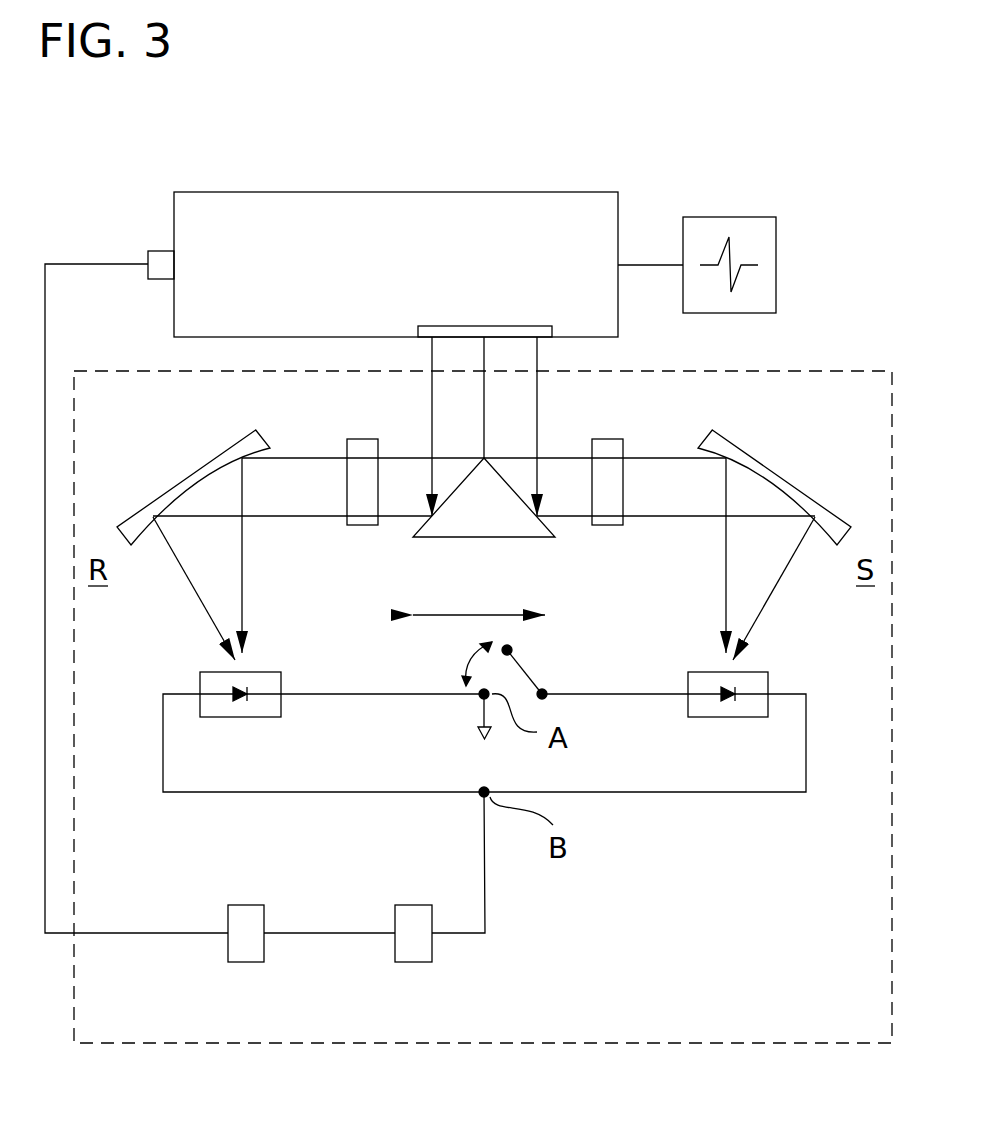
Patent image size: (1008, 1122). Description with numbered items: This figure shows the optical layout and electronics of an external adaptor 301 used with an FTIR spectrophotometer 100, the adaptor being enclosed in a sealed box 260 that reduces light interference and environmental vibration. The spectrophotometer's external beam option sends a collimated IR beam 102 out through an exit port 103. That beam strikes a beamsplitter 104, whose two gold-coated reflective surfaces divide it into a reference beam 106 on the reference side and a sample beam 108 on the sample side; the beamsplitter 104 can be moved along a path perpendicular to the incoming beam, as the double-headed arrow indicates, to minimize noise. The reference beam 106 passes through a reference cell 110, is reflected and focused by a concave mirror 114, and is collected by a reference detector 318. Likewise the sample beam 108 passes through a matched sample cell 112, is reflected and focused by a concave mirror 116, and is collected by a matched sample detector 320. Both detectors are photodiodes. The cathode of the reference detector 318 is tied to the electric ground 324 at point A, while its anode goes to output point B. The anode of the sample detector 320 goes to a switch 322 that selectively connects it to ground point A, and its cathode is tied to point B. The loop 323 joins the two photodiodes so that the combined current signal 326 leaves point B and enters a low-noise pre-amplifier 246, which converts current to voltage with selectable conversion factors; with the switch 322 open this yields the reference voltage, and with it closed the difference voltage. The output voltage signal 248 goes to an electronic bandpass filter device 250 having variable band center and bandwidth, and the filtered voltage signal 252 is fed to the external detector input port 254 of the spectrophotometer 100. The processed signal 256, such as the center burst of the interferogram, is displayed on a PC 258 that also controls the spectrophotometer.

The FTIR spectrophotometer 100 is at (378, 208).
The collimated IR beam 102 is at (507, 447).
The exit port 103 is at (488, 325).
The beamsplitter 104 is at (463, 523).
The reference beam 106 is at (408, 503).
The sample beam 108 is at (560, 503).
The reference cell 110 is at (363, 437).
The sample cell 112 is at (608, 438).
The concave mirror 114 is at (190, 473).
The concave mirror 116 is at (780, 473).
The low-noise pre-amplifier 246 is at (415, 962).
The output voltage signal 248 is at (335, 933).
The electronic bandpass filter device 250 is at (250, 962).
The voltage signal 252 is at (105, 933).
The external detector input port 254 is at (160, 250).
The processed signal 256 is at (636, 262).
The PC 258 is at (778, 238).
The sealed box 260 is at (810, 372).
The external adaptor 301 is at (754, 980).
The reference detector 318 is at (200, 685).
The sample detector 320 is at (768, 682).
The switch 322 is at (520, 670).
The detector loop 323 is at (262, 792).
The electric ground 324 is at (477, 733).
The combined current signal 326 is at (485, 900).